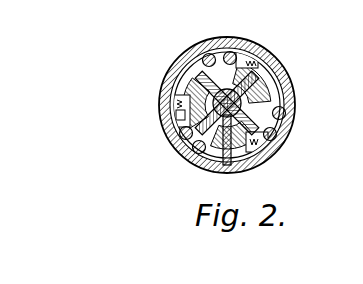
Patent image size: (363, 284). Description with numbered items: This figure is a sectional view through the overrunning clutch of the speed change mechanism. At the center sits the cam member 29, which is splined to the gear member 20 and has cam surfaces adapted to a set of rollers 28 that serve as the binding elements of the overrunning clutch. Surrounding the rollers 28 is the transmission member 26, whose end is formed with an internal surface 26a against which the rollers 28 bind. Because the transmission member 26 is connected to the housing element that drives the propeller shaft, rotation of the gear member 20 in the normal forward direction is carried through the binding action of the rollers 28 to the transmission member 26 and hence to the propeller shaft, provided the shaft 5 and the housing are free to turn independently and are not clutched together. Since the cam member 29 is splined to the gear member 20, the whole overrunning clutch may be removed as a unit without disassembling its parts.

The shaft 5 is at (242, 166).
The gear member 20 is at (200, 94).
The transmission member 26 is at (193, 59).
The internal surface 26a is at (296, 106).
The rollers 28 is at (228, 50).
The cam member 29 is at (268, 76).